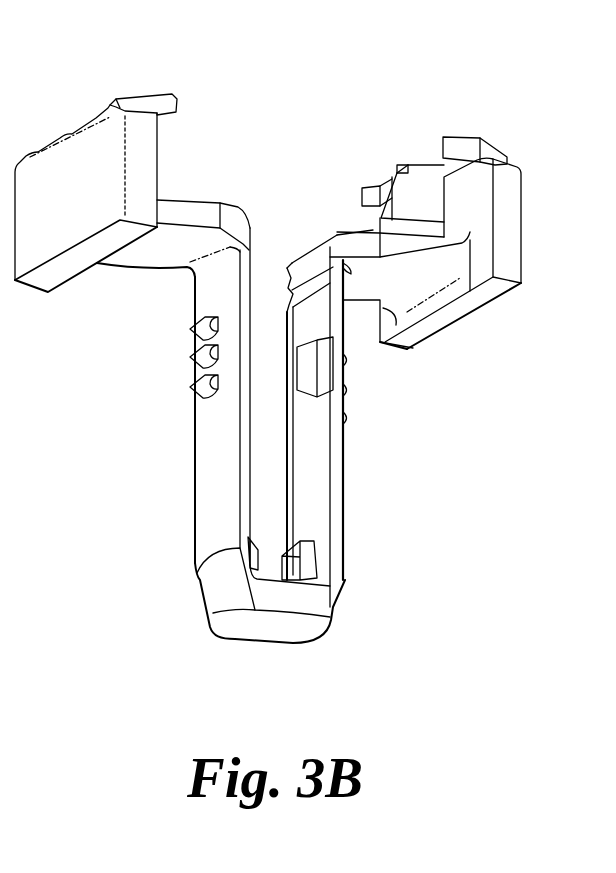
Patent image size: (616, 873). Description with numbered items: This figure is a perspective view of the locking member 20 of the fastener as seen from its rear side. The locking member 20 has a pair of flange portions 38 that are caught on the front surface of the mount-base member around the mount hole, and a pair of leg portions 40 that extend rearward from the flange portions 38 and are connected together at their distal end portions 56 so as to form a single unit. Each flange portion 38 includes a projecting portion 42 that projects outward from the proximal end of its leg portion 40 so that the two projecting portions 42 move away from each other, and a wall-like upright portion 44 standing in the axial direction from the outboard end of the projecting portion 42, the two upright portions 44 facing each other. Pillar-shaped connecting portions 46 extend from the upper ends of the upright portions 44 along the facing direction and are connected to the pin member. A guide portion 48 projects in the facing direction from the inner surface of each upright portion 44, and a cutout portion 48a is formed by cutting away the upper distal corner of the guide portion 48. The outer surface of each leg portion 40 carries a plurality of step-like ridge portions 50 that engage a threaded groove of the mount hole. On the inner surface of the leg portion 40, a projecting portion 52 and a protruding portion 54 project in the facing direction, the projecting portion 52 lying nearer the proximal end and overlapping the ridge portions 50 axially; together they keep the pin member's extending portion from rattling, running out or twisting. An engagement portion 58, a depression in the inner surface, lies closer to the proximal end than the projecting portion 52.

The locking member 20 is at (348, 685).
The flange portion 38 is at (130, 254).
The leg portion 40 is at (214, 453).
The projecting portion 42 is at (163, 257).
The upright portion 44 is at (55, 187).
The connecting portion 46 is at (160, 93).
The guide portion 48 is at (423, 183).
The cutout portion 48a is at (405, 163).
The ridge portion 50 is at (193, 363).
The projecting portion 52 is at (325, 365).
The protruding portion 54 is at (252, 562).
The distal end portion 56 is at (282, 603).
The engagement portion 58 is at (312, 283).